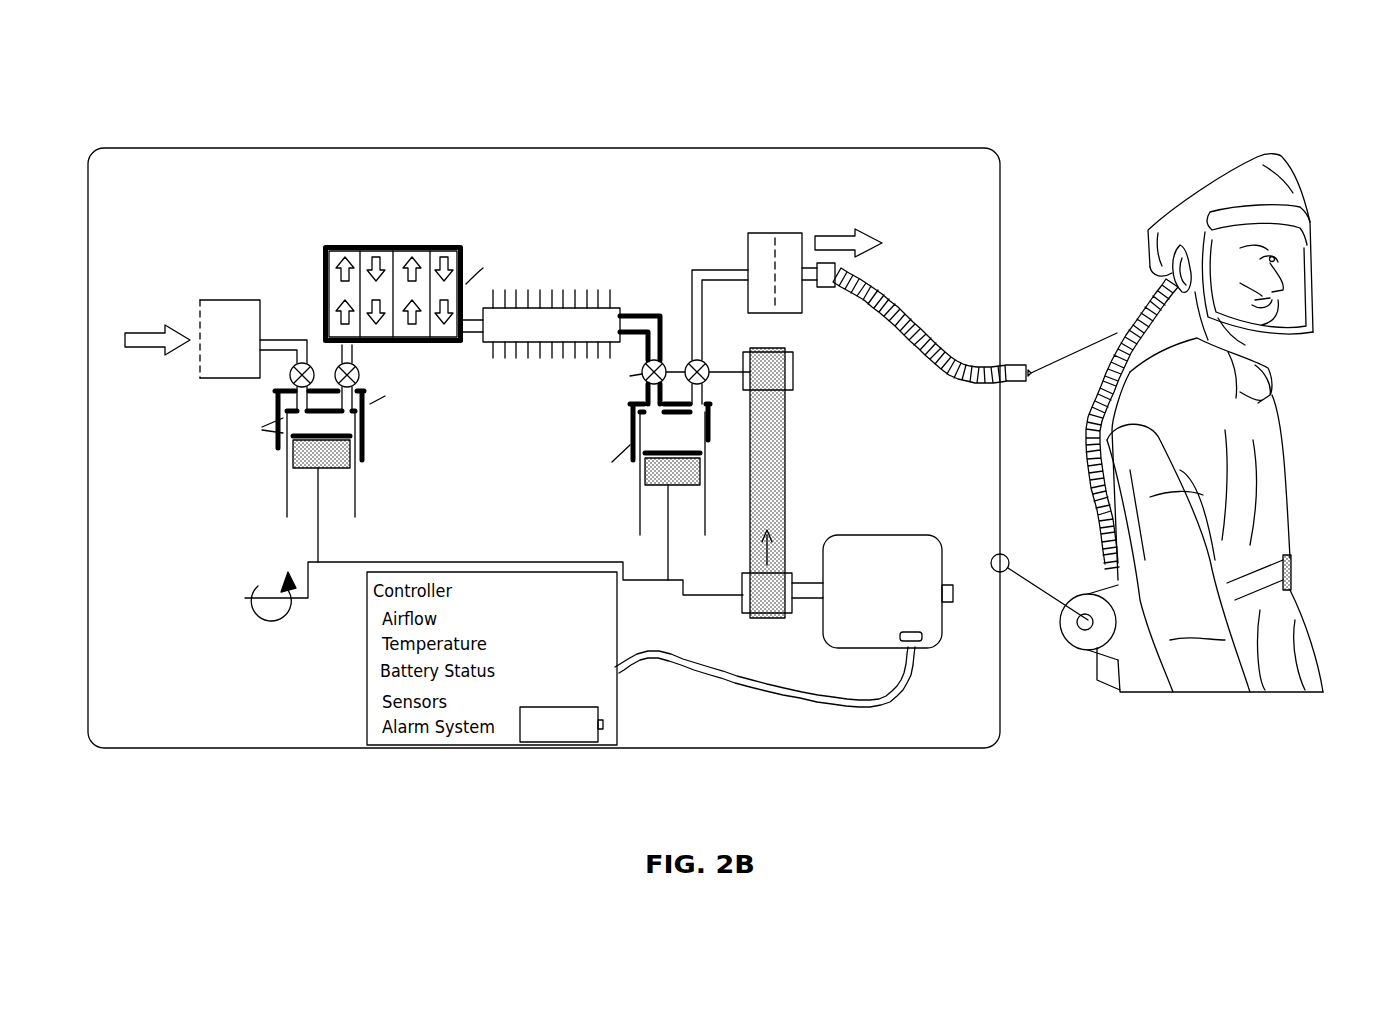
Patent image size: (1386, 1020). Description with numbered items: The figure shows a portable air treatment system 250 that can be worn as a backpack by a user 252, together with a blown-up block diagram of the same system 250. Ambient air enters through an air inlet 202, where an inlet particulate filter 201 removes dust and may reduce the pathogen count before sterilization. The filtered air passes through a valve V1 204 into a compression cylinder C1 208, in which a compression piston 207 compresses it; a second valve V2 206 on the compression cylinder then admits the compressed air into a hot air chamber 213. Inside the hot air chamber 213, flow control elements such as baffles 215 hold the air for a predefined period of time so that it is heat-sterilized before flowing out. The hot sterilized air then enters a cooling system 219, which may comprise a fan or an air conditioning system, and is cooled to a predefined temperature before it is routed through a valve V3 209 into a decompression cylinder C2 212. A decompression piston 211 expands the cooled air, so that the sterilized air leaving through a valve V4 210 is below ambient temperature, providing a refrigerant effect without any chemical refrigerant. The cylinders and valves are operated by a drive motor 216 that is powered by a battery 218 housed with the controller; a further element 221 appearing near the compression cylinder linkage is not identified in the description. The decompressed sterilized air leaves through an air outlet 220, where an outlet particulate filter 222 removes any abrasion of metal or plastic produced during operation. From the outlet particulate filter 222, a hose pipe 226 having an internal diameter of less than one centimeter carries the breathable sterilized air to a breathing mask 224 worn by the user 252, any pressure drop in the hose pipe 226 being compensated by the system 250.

The air treatment system 250 is at (112, 88).
The inlet particulate filter 201 is at (215, 330).
The air inlet 202 is at (292, 338).
The valve V1 204 is at (290, 374).
The baffles 215 is at (370, 290).
The hot air chamber 213 is at (468, 256).
The cooling system 219 is at (595, 303).
The valve V3 209 is at (654, 360).
The valve V4 210 is at (705, 361).
The air outlet 220 is at (723, 273).
The outlet particulate filter 222 is at (802, 233).
The hose pipe 226 is at (912, 324).
The decompression cylinder C2 212 is at (630, 506).
The decompression piston 211 is at (681, 516).
The compression cylinder C1 208 is at (285, 505).
The compression piston 207 is at (292, 468).
The valve V2 206 is at (346, 470).
The crank linkage 221 is at (256, 586).
The battery 218 is at (571, 743).
The drive motor 216 is at (945, 553).
The breathing mask 224 is at (1305, 250).
The user 252 is at (1285, 500).